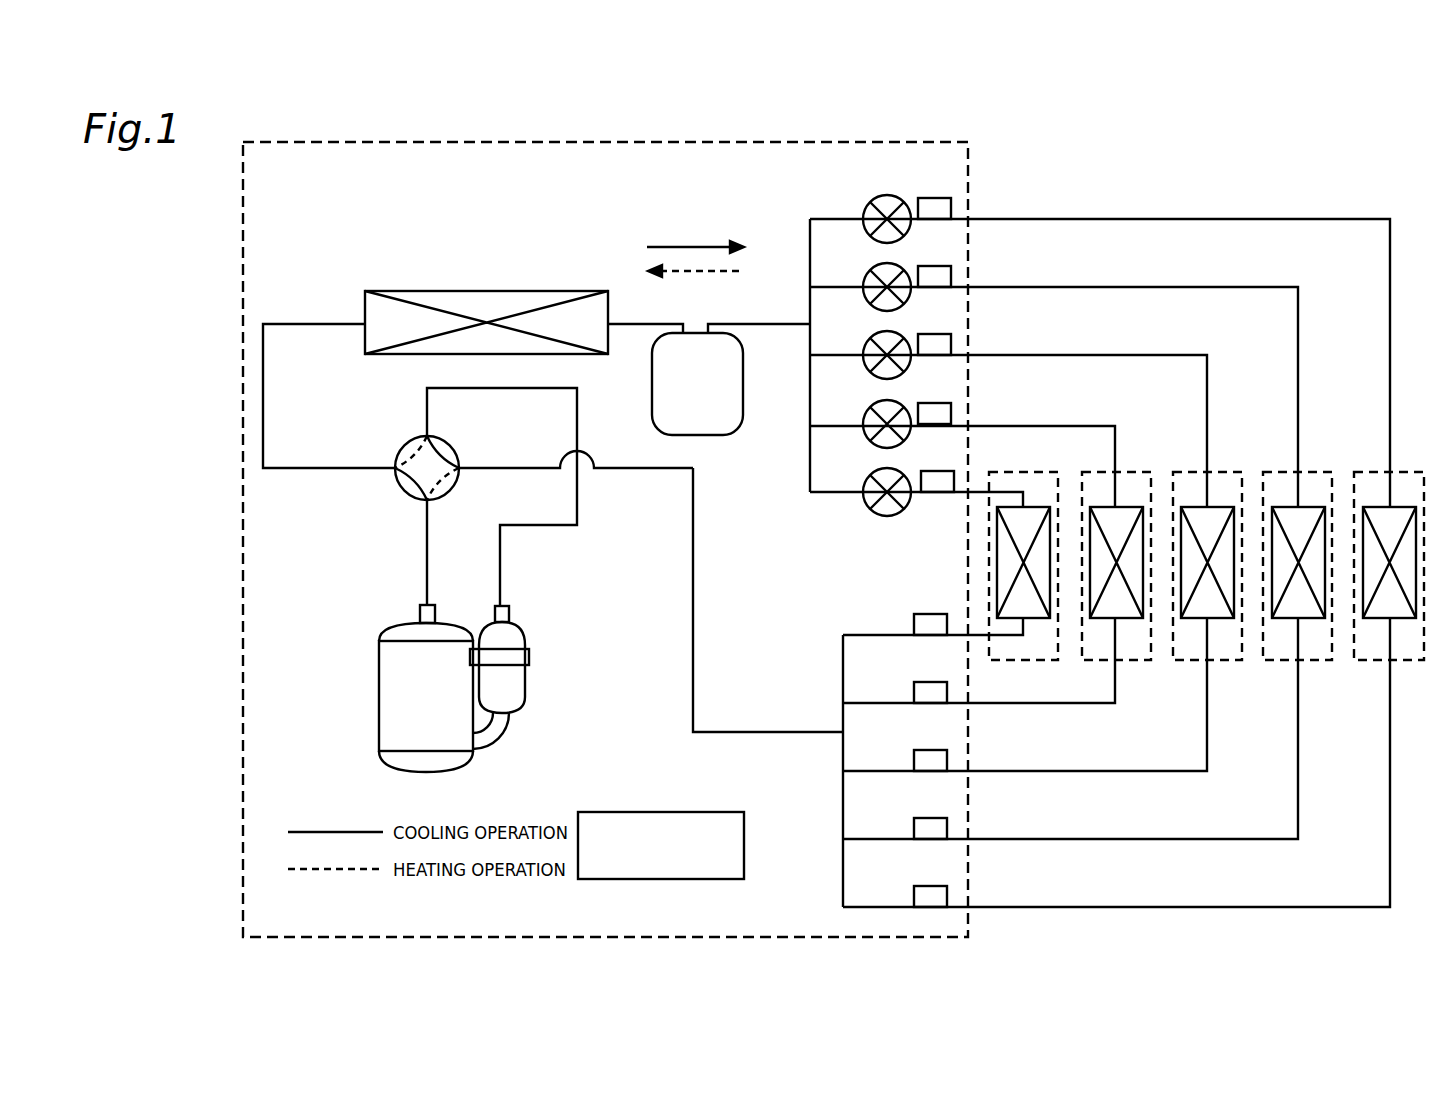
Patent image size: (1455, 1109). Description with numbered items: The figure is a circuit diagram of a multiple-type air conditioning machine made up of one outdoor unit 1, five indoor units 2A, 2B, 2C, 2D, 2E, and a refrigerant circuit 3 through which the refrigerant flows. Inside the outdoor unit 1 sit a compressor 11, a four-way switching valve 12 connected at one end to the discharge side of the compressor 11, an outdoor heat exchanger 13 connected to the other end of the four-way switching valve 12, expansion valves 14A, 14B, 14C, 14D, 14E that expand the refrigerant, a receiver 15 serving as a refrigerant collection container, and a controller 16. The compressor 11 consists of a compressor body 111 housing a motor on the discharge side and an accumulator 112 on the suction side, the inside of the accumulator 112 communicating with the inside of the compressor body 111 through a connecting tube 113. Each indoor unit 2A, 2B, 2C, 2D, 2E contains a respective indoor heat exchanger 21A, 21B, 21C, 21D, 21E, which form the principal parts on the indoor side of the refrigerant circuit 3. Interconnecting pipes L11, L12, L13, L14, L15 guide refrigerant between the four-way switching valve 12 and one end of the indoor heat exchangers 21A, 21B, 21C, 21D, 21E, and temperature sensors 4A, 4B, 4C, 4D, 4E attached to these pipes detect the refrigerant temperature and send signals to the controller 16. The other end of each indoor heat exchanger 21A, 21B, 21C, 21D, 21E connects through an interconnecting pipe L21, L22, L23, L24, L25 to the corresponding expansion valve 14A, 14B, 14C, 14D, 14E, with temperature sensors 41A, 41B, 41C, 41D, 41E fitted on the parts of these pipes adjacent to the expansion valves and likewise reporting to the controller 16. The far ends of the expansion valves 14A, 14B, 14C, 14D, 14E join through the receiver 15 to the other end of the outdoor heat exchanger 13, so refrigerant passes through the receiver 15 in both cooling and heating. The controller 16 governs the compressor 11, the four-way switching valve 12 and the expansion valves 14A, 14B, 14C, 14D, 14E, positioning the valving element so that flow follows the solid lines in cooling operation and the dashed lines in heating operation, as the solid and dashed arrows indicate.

The outdoor unit 1 is at (652, 940).
The refrigerant circuit 3 is at (757, 722).
The compressor 11 is at (445, 685).
The compressor body 111 is at (393, 697).
The accumulator 112 is at (515, 683).
The connecting tube 113 is at (497, 730).
The four-way switching valve 12 is at (438, 441).
The outdoor heat exchanger 13 is at (487, 290).
The expansion valve 14A is at (871, 474).
The expansion valve 14B is at (871, 406).
The expansion valve 14C is at (871, 337).
The expansion valve 14D is at (871, 269).
The expansion valve 14E is at (871, 201).
The receiver 15 is at (743, 405).
The controller 16 is at (641, 812).
The indoor unit 2A is at (1034, 573).
The indoor unit 2B is at (1127, 573).
The indoor unit 2C is at (1218, 573).
The indoor unit 2D is at (1309, 573).
The indoor unit 2E is at (1399, 573).
The indoor heat exchanger 21A is at (1030, 620).
The indoor heat exchanger 21B is at (1123, 620).
The indoor heat exchanger 21C is at (1214, 620).
The indoor heat exchanger 21D is at (1305, 620).
The indoor heat exchanger 21E is at (1396, 620).
The temperature sensor 4A is at (926, 613).
The temperature sensor 4B is at (926, 681).
The temperature sensor 4C is at (926, 749).
The temperature sensor 4D is at (926, 817).
The temperature sensor 4E is at (926, 885).
The temperature sensor 41A is at (938, 471).
The temperature sensor 41B is at (935, 403).
The temperature sensor 41C is at (935, 334).
The temperature sensor 41D is at (935, 266).
The temperature sensor 41E is at (935, 198).
The interconnecting pipe L11 is at (980, 640).
The interconnecting pipe L12 is at (1083, 705).
The interconnecting pipe L13 is at (1153, 773).
The interconnecting pipe L14 is at (1235, 841).
The interconnecting pipe L15 is at (1320, 909).
The interconnecting pipe L21 is at (986, 487).
The interconnecting pipe L22 is at (1058, 425).
The interconnecting pipe L23 is at (1130, 354).
The interconnecting pipe L24 is at (1215, 286).
The interconnecting pipe L25 is at (1283, 218).